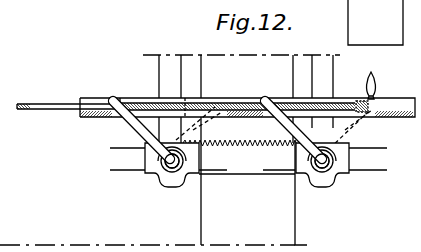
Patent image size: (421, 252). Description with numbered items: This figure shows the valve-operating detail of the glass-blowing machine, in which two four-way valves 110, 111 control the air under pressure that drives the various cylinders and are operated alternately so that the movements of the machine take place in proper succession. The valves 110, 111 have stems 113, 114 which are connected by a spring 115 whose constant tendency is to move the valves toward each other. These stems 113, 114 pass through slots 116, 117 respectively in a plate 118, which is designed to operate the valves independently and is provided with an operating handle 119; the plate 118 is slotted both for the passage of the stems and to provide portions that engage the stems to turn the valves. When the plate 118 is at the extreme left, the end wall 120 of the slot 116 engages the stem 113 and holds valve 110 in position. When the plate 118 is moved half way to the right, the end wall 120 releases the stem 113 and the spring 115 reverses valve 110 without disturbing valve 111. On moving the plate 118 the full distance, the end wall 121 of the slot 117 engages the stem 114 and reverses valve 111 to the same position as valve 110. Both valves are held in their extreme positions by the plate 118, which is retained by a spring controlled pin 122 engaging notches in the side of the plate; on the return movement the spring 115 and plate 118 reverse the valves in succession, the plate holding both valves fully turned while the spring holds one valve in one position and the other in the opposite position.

The four-way valve 110 is at (156, 177).
The four-way valve 111 is at (337, 173).
The stem 113 is at (143, 132).
The stem 114 is at (294, 132).
The spring 115 is at (241, 136).
The slot 116 is at (60, 104).
The slot 117 is at (240, 105).
The plate 118 is at (150, 103).
The operating handle 119 is at (379, 85).
The end wall 120 is at (124, 103).
The end wall 121 is at (184, 103).
The spring controlled pin 122 is at (358, 101).